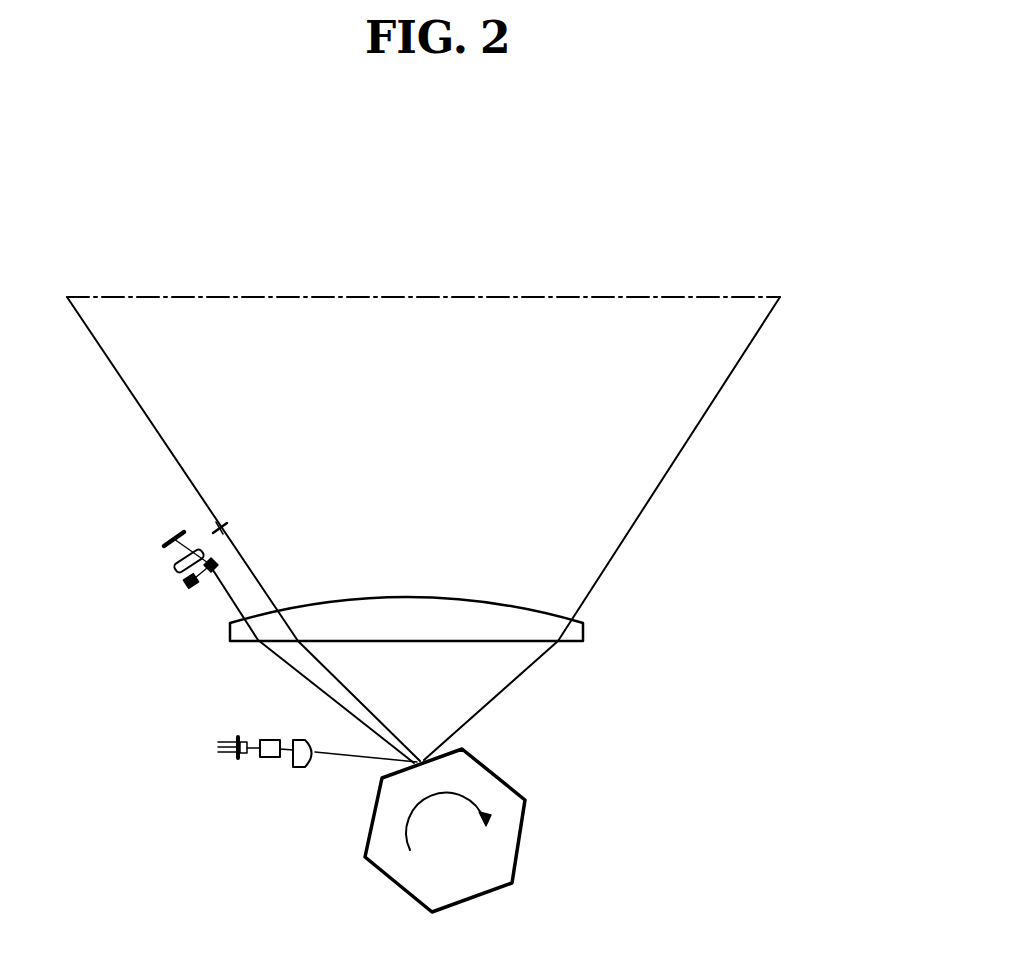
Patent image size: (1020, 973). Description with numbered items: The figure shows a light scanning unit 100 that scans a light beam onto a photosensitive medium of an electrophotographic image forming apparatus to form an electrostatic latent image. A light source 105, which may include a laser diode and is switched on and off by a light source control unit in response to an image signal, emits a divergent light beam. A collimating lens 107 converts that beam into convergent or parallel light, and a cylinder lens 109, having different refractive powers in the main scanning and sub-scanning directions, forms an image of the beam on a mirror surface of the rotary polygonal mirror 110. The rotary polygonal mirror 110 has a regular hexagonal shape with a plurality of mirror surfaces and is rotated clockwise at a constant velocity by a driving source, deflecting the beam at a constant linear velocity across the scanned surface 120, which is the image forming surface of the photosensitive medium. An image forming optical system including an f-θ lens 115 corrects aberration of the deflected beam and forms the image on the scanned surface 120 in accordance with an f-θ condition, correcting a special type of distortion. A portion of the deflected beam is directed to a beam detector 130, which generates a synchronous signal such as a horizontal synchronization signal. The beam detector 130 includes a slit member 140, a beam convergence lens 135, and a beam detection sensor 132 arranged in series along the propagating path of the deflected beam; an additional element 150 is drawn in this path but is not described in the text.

The light scanning unit 100 is at (740, 457).
The light source 105 is at (232, 758).
The collimating lens 107 is at (265, 757).
The cylinder lens 109 is at (302, 767).
The rotary polygonal mirror 110 is at (518, 865).
The f-θ lens 115 is at (584, 634).
The scanned surface 120 is at (605, 278).
The beam detector 130 is at (219, 527).
The beam detection sensor 132 is at (167, 538).
The beam convergence lens 135 is at (178, 562).
The slit member 140 is at (193, 586).
The reflecting mirror 150 is at (217, 562).